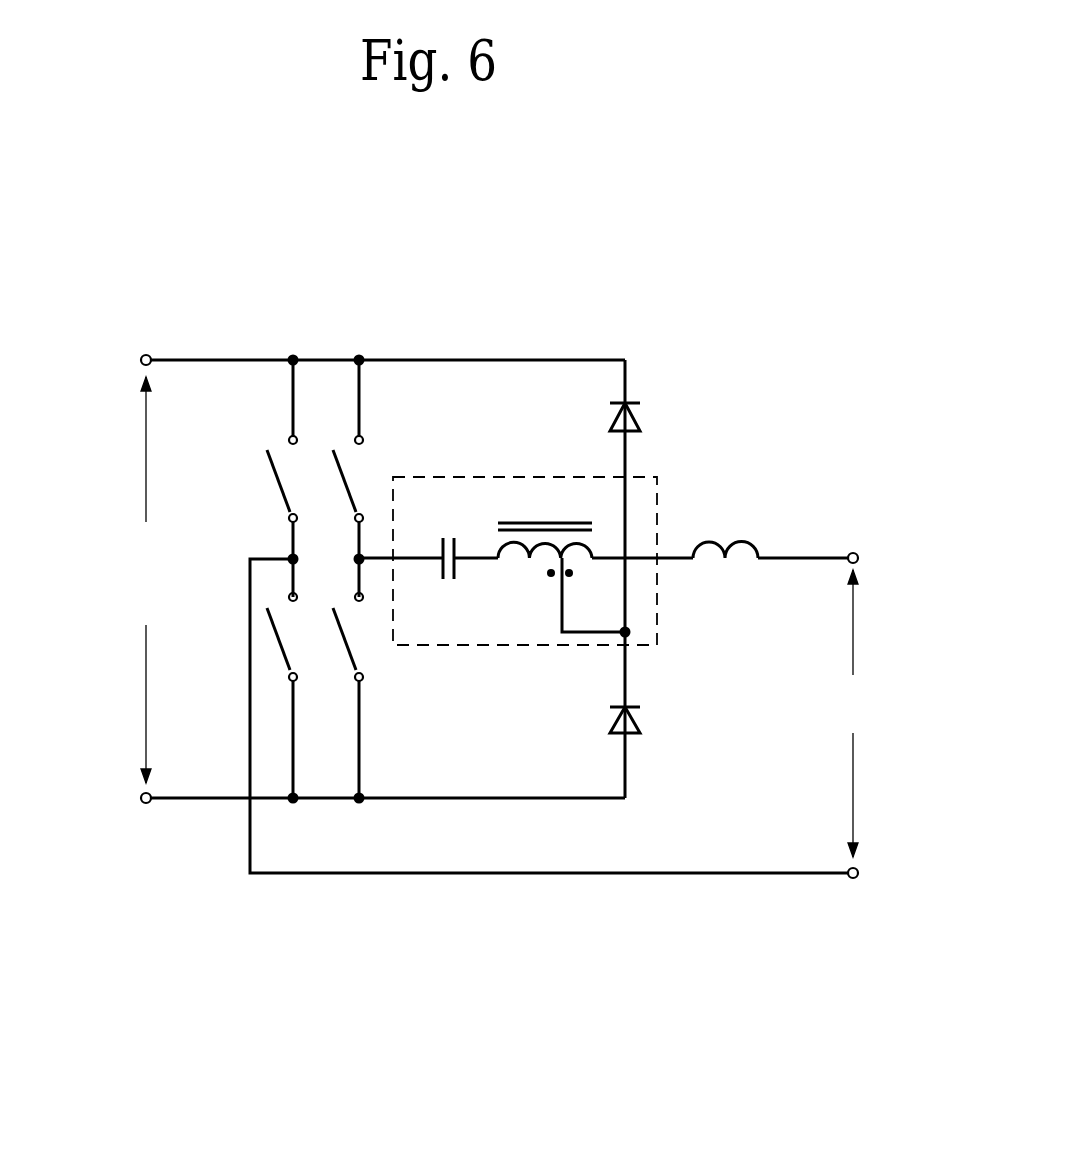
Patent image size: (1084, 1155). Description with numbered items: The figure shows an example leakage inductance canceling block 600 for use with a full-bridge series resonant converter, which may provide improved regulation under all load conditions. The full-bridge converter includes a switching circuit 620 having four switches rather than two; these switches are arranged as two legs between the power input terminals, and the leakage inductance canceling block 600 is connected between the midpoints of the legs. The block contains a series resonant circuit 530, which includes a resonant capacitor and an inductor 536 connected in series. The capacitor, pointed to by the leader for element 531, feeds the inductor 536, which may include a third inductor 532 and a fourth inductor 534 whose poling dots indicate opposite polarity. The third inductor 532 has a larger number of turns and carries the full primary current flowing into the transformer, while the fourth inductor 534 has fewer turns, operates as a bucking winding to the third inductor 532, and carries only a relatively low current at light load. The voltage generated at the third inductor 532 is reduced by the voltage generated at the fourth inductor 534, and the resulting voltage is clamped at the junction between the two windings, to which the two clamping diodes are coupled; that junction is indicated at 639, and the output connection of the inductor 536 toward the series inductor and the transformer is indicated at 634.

The leakage inductance canceling block 600 is at (512, 710).
The switching circuit 620 is at (401, 499).
The series resonant circuit 530 is at (446, 477).
The resonant capacitor Cr4 531 is at (463, 510).
The third inductor 532 is at (503, 593).
The fourth inductor 534 is at (579, 619).
The inductor 536 is at (560, 504).
The output connection of resonant inductor 634 is at (592, 553).
The tap junction node 639 is at (627, 634).